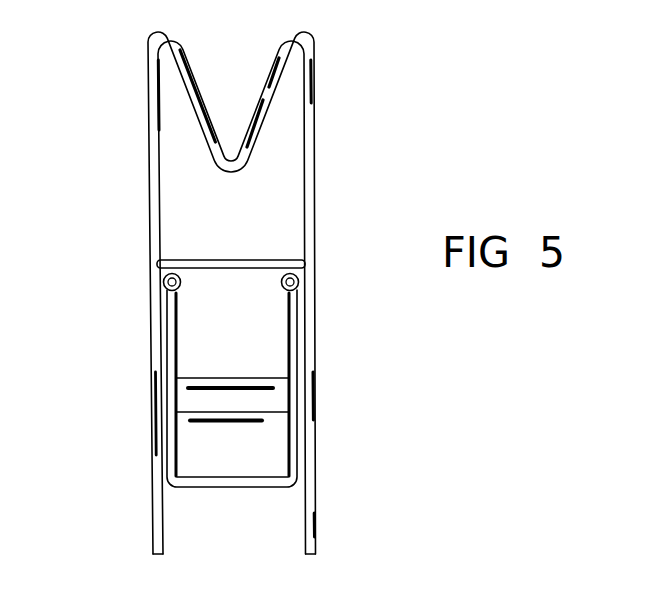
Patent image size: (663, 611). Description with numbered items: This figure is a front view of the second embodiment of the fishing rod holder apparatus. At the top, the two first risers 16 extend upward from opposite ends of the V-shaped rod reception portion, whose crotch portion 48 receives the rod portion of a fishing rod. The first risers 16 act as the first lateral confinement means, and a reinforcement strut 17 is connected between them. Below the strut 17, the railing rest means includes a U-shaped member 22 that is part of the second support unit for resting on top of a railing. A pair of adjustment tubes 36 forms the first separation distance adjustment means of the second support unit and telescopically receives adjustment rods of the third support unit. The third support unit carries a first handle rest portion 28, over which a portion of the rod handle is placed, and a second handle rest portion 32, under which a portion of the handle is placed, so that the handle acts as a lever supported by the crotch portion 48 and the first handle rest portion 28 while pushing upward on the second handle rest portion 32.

The first risers 16 is at (150, 228).
The reinforcement strut 17 is at (217, 255).
The U-shaped member 22 is at (232, 487).
The first handle rest portion 28 is at (218, 380).
The second handle rest portion 32 is at (217, 423).
The adjustment tubes 36 is at (282, 288).
The crotch portion 48 is at (232, 158).